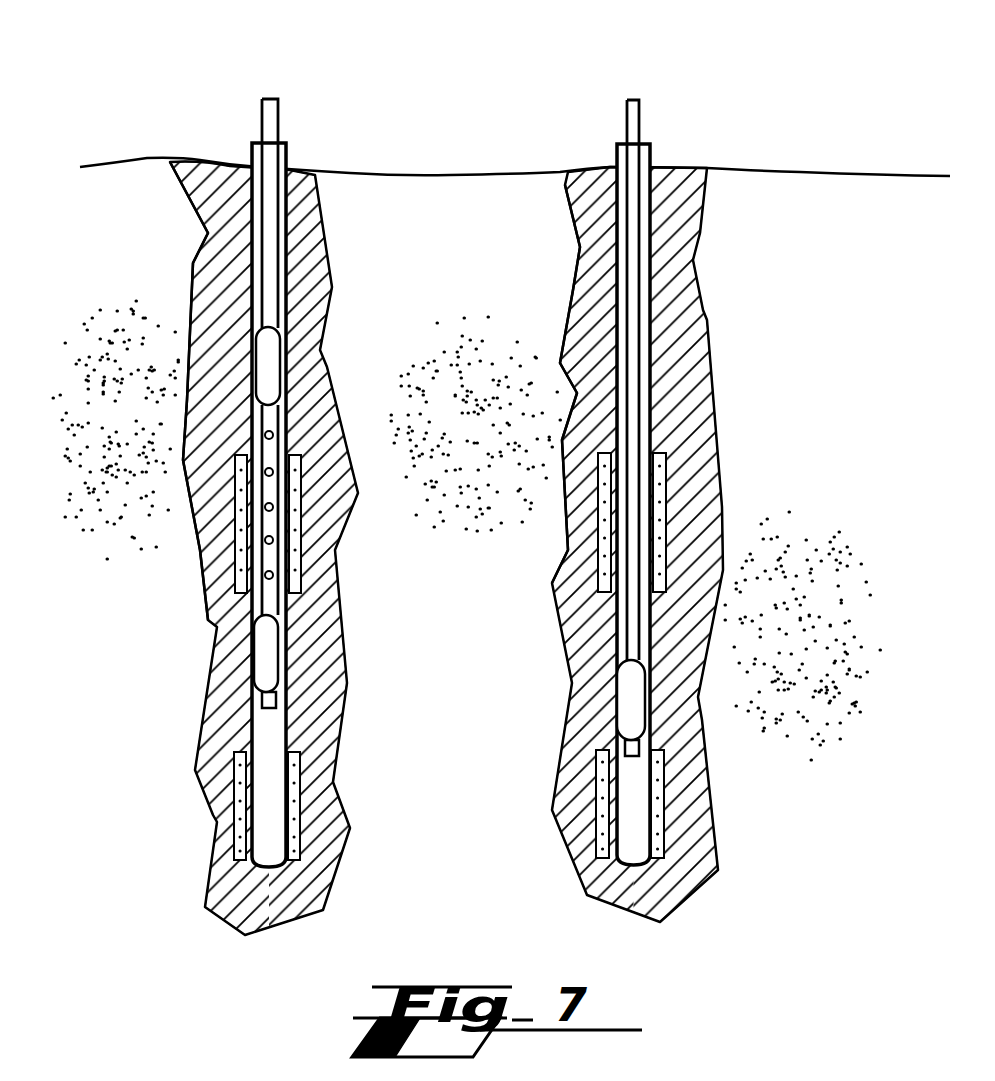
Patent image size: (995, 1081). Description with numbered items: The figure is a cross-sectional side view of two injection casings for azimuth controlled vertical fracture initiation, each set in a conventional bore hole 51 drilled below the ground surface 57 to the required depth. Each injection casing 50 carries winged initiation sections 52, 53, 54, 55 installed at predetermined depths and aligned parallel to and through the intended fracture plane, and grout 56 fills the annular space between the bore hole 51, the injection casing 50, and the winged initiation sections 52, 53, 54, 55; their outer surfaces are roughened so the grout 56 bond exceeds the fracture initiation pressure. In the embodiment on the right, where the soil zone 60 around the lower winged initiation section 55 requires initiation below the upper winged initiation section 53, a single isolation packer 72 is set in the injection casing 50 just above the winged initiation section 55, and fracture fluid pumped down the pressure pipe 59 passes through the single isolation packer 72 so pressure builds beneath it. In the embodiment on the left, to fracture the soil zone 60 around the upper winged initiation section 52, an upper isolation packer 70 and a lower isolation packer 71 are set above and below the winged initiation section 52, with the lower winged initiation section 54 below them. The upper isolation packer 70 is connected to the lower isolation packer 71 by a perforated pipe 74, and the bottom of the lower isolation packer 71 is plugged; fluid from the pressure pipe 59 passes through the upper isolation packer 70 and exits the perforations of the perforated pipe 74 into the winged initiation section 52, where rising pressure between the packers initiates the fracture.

The injection casing 50 is at (287, 140).
The bore hole 51 is at (327, 232).
The upper winged initiation section 52 is at (300, 492).
The upper winged initiation section 53 is at (657, 490).
The winged initiation section 54 is at (243, 797).
The lower winged initiation section 55 is at (657, 813).
The grout 56 is at (200, 273).
The ground surface 57 is at (160, 158).
The pressure pipe 59 is at (273, 97).
The soil zone 60 is at (130, 353).
The upper isolation packer 70 is at (268, 368).
The lower isolation packer 71 is at (265, 661).
The single isolation packer 72 is at (625, 698).
The perforated pipe 74 is at (265, 433).